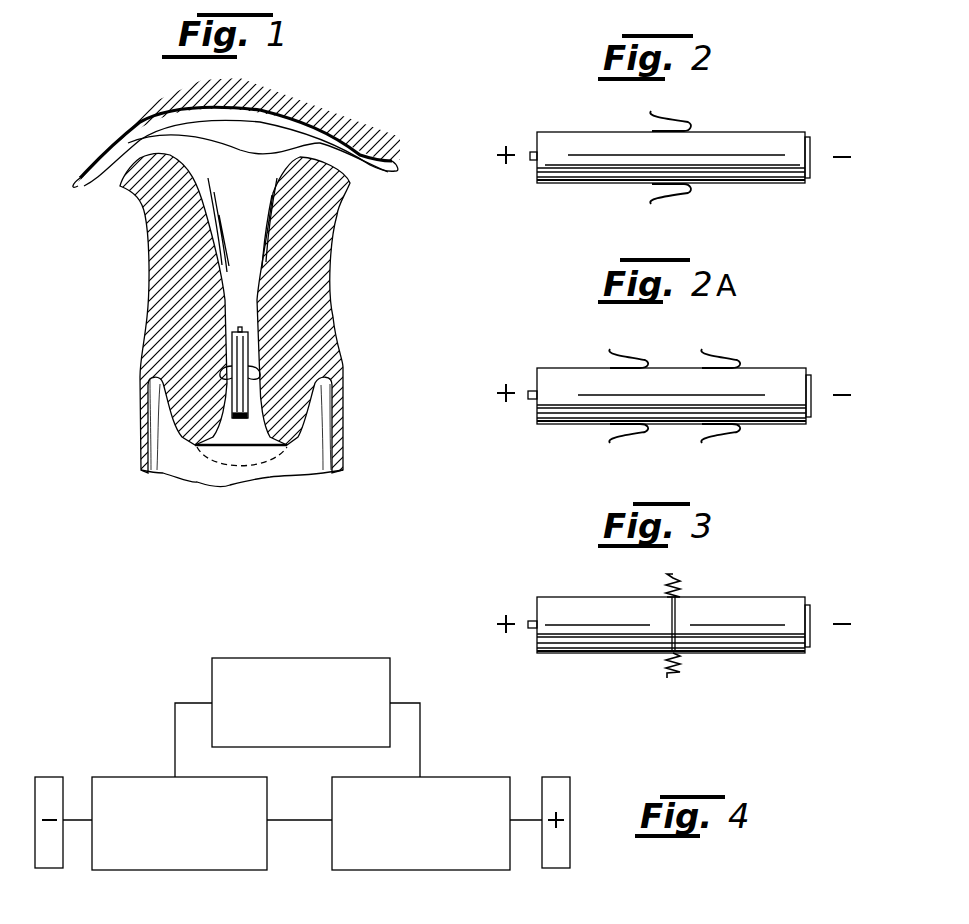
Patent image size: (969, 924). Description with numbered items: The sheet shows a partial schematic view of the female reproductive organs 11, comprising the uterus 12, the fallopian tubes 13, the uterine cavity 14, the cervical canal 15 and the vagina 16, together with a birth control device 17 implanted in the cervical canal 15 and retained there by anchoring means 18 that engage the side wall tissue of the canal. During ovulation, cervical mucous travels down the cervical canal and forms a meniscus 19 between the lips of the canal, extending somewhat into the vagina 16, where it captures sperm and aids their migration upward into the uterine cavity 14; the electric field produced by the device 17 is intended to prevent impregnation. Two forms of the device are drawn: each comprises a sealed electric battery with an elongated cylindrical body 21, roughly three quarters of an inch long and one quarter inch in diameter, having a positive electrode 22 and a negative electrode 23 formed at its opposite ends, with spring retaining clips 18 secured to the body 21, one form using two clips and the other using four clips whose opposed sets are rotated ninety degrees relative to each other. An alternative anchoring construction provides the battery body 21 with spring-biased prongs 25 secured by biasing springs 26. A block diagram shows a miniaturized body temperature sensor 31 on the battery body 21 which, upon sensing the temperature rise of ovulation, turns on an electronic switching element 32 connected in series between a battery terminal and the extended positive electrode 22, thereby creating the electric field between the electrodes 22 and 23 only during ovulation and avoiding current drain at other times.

In FIG. 1, the female reproductive organs 11 is at (322, 90).
In FIG. 1, the uterus 12 is at (190, 118).
In FIG. 1, the fallopian tubes 13 is at (108, 184).
In FIG. 1, the uterine cavity 14 is at (250, 197).
In FIG. 1, the cervical canal 15 is at (255, 342).
In FIG. 1, the vagina 16 is at (311, 462).
In FIG. 1, the birth control device 17 is at (236, 343).
In FIG. 2, the birth control device 17 is at (620, 116).
In FIG. 2A, the birth control device 17 is at (662, 348).
In FIG. 3, the birth control device 17 is at (731, 586).
In FIG. 1, the anchoring means 18 is at (221, 376).
In FIG. 2, the anchoring means 18 is at (677, 110).
In FIG. 2A, the anchoring means 18 is at (628, 356).
In FIG. 1, the meniscus of cervical mucous 19 is at (208, 452).
In FIG. 2, the battery body 21 is at (571, 176).
In FIG. 2A, the battery body 21 is at (572, 378).
In FIG. 3, the battery body 21 is at (553, 642).
In FIG. 4, the battery body 21 is at (172, 856).
In FIG. 1, the positive electrode 22 is at (243, 330).
In FIG. 2, the positive electrode 22 is at (529, 158).
In FIG. 2A, the positive electrode 22 is at (530, 388).
In FIG. 3, the positive electrode 22 is at (532, 618).
In FIG. 4, the positive electrode 22 is at (551, 777).
In FIG. 1, the negative electrode 23 is at (242, 444).
In FIG. 2, the negative electrode 23 is at (809, 163).
In FIG. 2A, the negative electrode 23 is at (812, 382).
In FIG. 3, the negative electrode 23 is at (811, 606).
In FIG. 4, the negative electrode 23 is at (48, 777).
In FIG. 3, the spring-biased prongs 25 is at (668, 577).
In FIG. 3, the biasing springs 26 is at (668, 655).
In FIG. 4, the body temperature sensor 31 is at (364, 660).
In FIG. 4, the switching element 32 is at (448, 856).